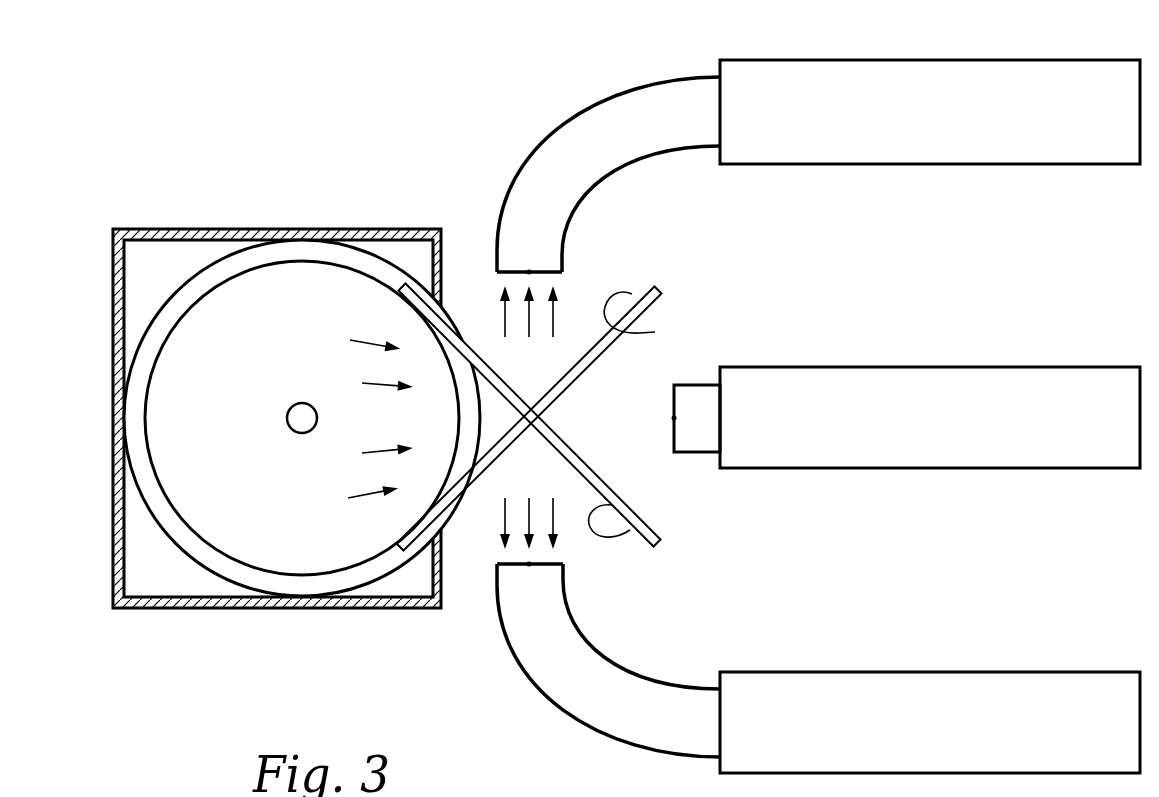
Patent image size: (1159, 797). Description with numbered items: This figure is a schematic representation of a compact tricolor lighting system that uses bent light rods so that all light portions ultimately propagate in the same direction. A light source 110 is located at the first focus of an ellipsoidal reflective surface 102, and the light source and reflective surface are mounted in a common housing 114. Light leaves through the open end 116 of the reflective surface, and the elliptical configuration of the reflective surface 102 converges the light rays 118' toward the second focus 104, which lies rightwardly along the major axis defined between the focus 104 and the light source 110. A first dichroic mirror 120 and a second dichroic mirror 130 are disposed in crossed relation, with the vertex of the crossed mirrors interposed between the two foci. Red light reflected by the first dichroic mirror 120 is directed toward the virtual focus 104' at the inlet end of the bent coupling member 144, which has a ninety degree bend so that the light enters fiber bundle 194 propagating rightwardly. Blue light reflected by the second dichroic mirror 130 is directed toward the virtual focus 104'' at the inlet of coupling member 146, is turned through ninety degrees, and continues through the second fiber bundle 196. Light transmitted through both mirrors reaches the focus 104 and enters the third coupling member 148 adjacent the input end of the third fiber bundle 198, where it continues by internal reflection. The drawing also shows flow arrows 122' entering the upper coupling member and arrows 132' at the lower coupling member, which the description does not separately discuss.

The reflective surface 102 is at (158, 364).
The second focus 104 is at (632, 412).
The virtual focus 104' is at (583, 259).
The virtual focus 104'' is at (598, 586).
The light source 110 is at (302, 420).
The housing 114 is at (217, 229).
The open end 116 is at (456, 416).
The light rays 118' is at (342, 405).
The first dichroic mirror 120 is at (655, 332).
The inlet air flow 122' is at (486, 248).
The second dichroic mirror 130 is at (632, 529).
The outlet air flow 132' is at (489, 589).
The coupling member 144 is at (588, 175).
The coupling member 146 is at (613, 690).
The third coupling member 148 is at (700, 400).
The fiber bundle 194 is at (1022, 60).
The second fiber bundle 196 is at (1030, 672).
The third fiber bundle 198 is at (1020, 365).